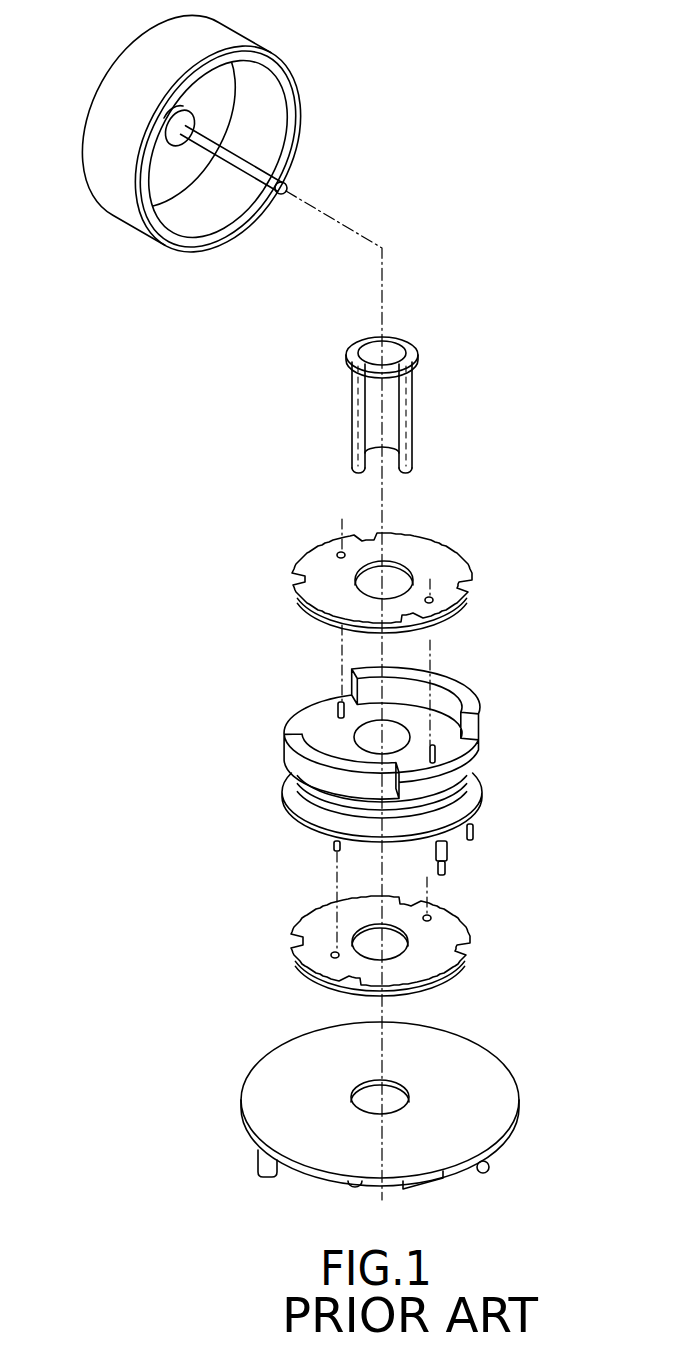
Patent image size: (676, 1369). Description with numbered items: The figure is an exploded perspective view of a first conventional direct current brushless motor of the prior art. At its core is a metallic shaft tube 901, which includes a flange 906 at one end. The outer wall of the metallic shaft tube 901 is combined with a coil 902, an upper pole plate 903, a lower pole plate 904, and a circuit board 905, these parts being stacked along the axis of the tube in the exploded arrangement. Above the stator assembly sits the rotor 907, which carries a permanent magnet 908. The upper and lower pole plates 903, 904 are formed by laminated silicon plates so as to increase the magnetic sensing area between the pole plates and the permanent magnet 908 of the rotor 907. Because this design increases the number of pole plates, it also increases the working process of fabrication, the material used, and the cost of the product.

The metallic shaft tube 901 is at (421, 376).
The coil 902 is at (477, 742).
The upper pole plate 903 is at (447, 570).
The lower pole plate 904 is at (453, 922).
The circuit board 905 is at (478, 1058).
The flange 906 is at (420, 355).
The rotor 907 is at (232, 160).
The permanent magnet 908 is at (190, 223).